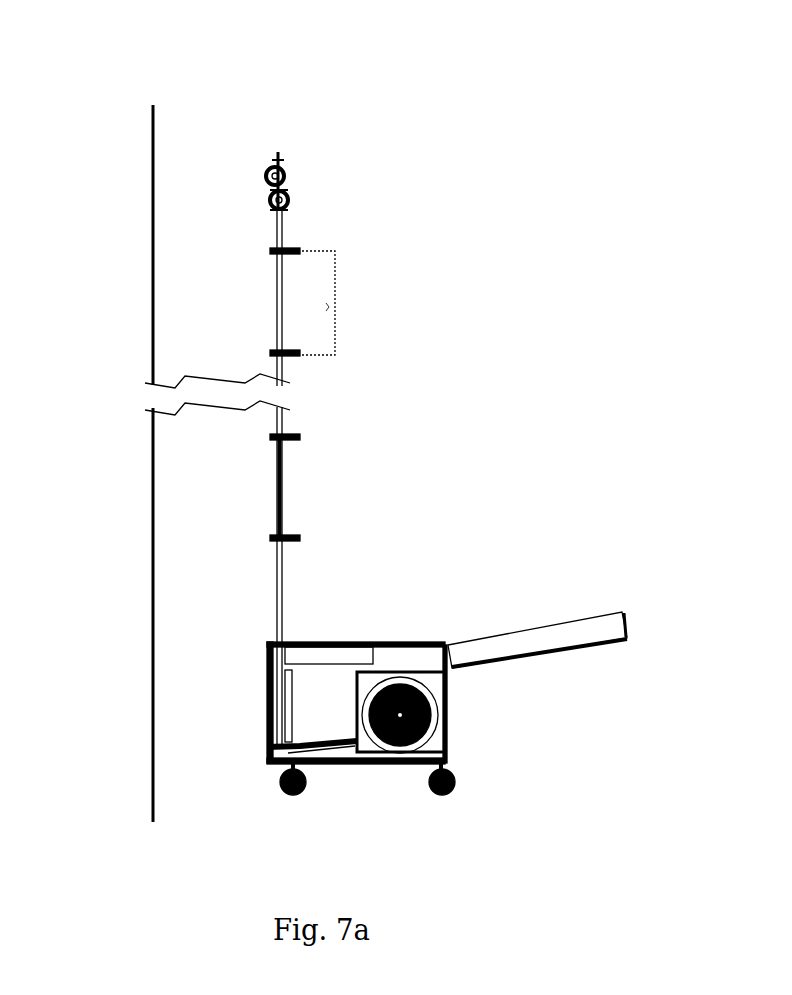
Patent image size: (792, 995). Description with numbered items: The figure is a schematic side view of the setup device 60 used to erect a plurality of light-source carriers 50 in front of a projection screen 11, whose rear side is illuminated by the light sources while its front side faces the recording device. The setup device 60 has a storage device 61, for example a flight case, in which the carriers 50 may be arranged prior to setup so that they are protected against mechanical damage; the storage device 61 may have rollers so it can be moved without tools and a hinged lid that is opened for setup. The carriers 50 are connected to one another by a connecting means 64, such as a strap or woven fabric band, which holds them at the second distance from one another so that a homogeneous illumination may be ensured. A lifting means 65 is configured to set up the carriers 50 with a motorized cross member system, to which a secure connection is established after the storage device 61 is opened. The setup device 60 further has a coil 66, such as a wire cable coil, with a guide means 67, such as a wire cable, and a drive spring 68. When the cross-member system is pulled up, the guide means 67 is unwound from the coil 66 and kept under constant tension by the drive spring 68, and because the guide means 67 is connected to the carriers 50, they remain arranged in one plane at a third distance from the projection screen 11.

The projection screen 11 is at (153, 292).
The carriers 50 is at (270, 437).
The setup device 60 is at (401, 488).
The storage device 61 is at (403, 643).
The connecting means 64 is at (283, 480).
The lifting means 65 is at (268, 172).
The coil 66 is at (448, 688).
The guide means 67 is at (280, 505).
The drive spring 68 is at (447, 762).